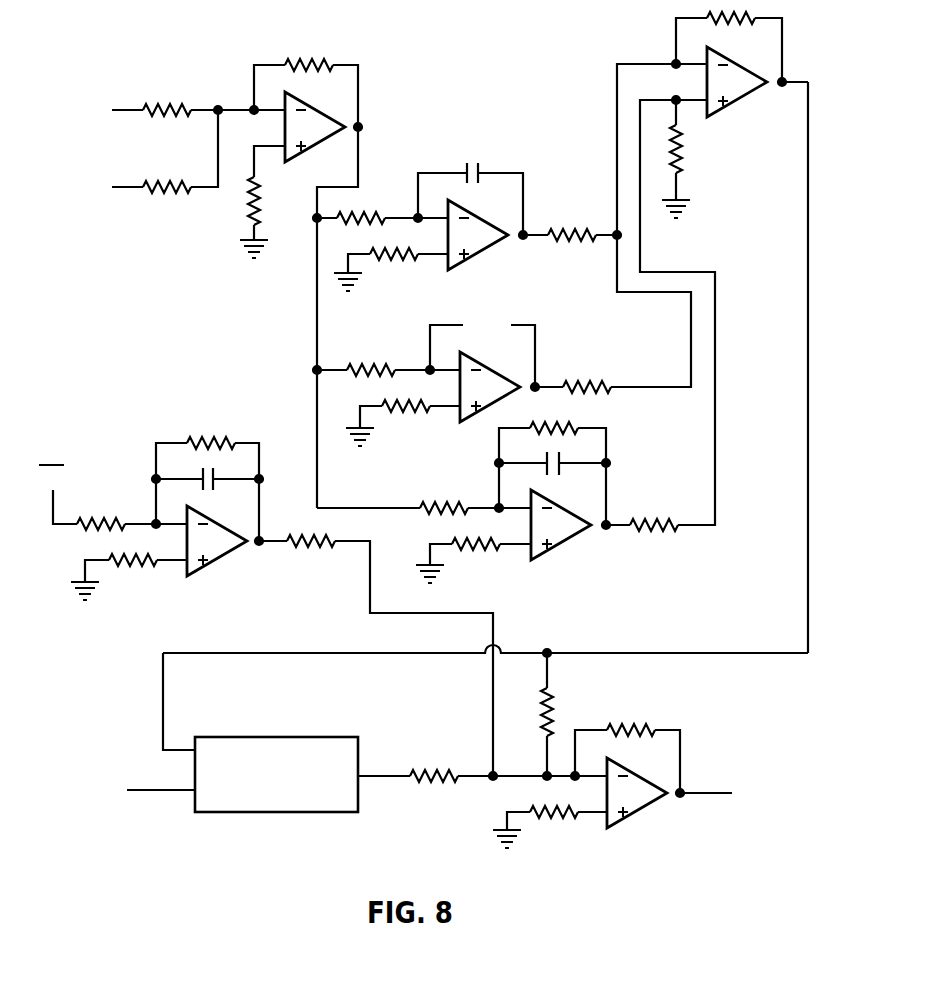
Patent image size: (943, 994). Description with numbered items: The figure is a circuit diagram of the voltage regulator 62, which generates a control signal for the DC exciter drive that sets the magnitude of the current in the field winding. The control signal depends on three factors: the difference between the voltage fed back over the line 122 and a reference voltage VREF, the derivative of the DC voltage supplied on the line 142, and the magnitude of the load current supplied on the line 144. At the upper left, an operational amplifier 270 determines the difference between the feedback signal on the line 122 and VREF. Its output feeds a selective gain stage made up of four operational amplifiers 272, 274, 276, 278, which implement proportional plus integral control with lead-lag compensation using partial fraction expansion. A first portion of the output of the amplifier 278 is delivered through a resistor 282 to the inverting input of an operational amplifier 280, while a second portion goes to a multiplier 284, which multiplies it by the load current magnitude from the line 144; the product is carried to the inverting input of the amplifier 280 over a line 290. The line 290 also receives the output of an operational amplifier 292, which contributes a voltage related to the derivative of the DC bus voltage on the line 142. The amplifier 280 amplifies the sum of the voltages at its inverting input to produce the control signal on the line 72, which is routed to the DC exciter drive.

The operational amplifier 270 is at (322, 113).
The line 122 is at (132, 188).
The operational amplifier 272 is at (486, 250).
The operational amplifier 274 is at (485, 408).
The operational amplifier 276 is at (556, 547).
The operational amplifier 278 is at (738, 100).
The voltage regulator 62 is at (769, 357).
The line 142 is at (55, 495).
The operational amplifier 292 is at (210, 562).
The line 144 is at (147, 790).
The multiplier 284 is at (234, 737).
The resistor 282 is at (552, 712).
The line 290 is at (515, 778).
The line 72 is at (703, 792).
The operational amplifier 280 is at (638, 810).